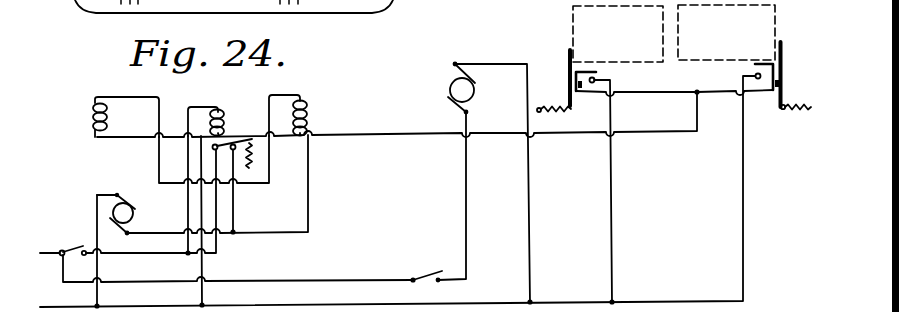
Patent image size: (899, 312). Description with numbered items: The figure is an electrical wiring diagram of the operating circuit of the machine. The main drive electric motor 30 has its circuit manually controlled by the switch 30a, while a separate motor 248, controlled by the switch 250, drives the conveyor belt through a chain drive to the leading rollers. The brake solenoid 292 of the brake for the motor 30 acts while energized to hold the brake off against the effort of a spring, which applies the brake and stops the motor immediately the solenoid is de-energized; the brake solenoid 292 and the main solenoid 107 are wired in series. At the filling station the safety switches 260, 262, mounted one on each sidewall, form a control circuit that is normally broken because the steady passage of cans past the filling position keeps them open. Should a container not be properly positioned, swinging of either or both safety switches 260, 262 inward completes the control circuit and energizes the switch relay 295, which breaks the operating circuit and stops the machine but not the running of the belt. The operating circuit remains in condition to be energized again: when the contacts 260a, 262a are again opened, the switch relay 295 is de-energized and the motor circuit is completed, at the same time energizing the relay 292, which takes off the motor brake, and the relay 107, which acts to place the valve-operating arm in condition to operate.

The brake solenoid 292 is at (92, 121).
The switch relay 295 is at (261, 94).
The main solenoid 107 is at (307, 110).
The conveyor motor 248 is at (451, 86).
The conveyor motor switch 250 is at (413, 278).
The main motor switch 30a is at (79, 216).
The main drive electric motor 30 is at (133, 213).
The safety switch 260 is at (573, 53).
The safety switch contact 260a is at (598, 75).
The safety switch 262 is at (775, 45).
The safety switch contact 262a is at (755, 64).